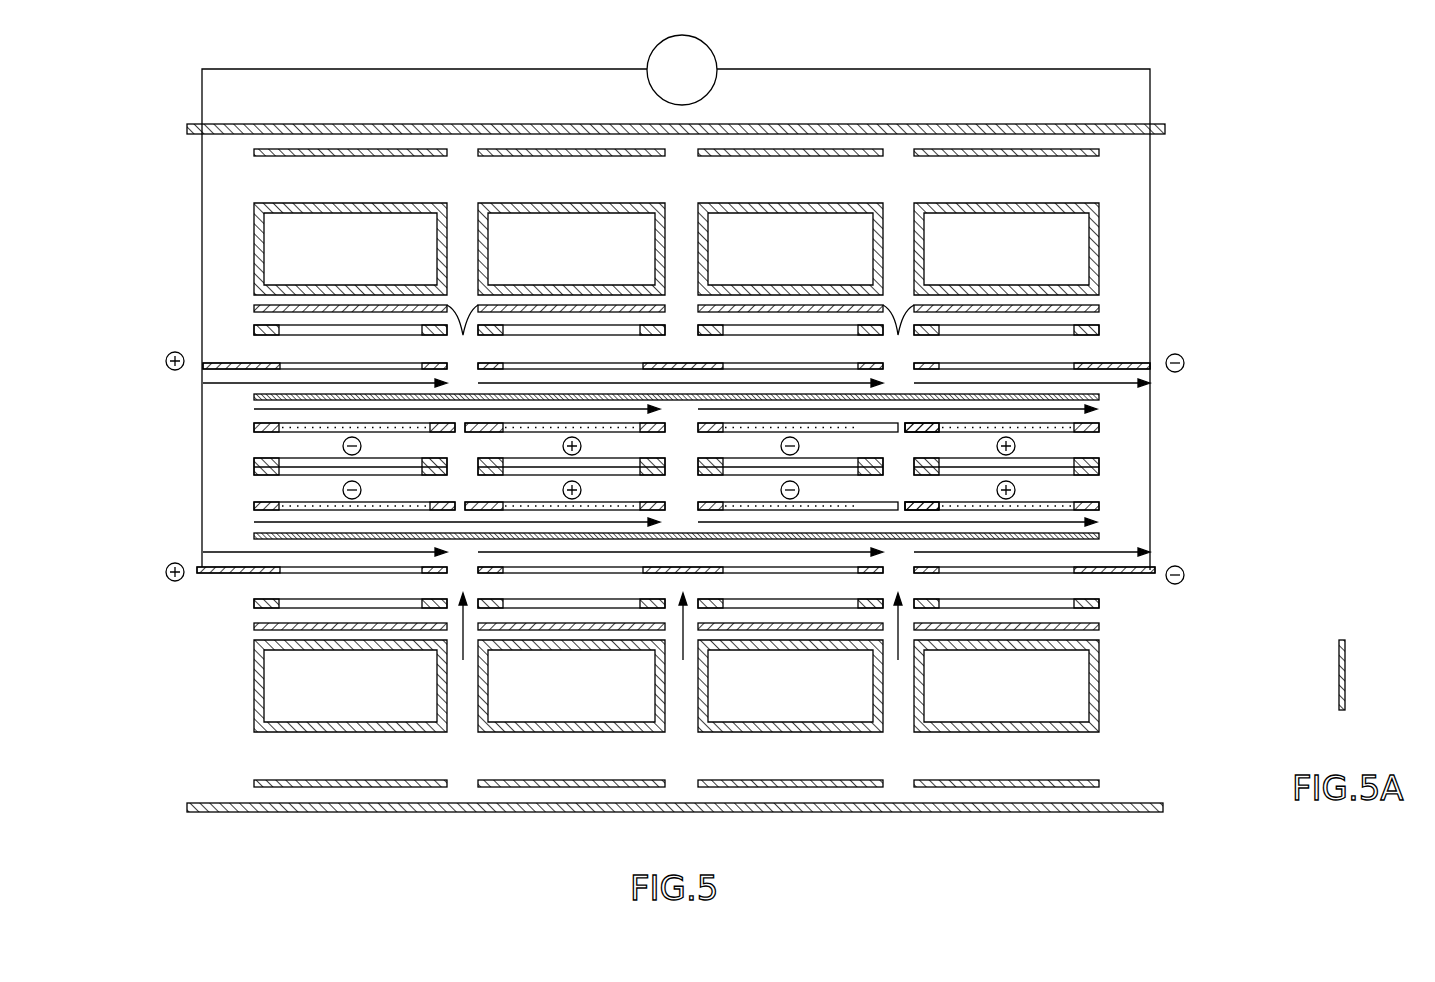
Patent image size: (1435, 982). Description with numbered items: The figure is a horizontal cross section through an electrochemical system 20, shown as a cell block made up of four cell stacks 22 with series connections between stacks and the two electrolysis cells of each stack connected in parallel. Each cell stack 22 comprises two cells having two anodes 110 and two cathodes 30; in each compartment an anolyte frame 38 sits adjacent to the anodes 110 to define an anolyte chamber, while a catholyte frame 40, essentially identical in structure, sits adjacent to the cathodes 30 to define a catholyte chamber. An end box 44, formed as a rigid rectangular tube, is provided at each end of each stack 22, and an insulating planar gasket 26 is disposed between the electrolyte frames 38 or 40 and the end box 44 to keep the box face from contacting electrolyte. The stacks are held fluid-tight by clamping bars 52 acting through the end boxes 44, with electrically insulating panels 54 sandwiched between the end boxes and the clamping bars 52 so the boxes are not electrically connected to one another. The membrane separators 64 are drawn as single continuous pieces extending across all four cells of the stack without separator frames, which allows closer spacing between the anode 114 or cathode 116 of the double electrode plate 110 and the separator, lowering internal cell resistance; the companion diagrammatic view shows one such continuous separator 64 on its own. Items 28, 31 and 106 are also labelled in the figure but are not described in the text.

In FIG. 5, the electrochemical system 20 is at (1168, 100).
In FIG. 5, the cell stack 22 is at (312, 203).
In FIG. 5, the insulating planar gasket 26 is at (1155, 680).
In FIG. 5, the air flow direction 28 is at (681, 644).
In FIG. 5, the cathode 30 is at (1142, 362).
In FIG. 5, the positive electrode connection 31 is at (205, 362).
In FIG. 5, the anolyte frame 38 is at (254, 330).
In FIG. 5, the catholyte frame 40 is at (1099, 330).
In FIG. 5, the end box 44 is at (383, 203).
In FIG. 5, the clamping bar 52 is at (360, 124).
In FIG. 5, the electrically insulating panel 54 is at (383, 156).
In FIG. 5, the membrane separator 64 is at (254, 397).
In FIG. 5A, the membrane separator 64 is at (1345, 690).
In FIG. 5, the electrode end connector 106 is at (468, 432).
In FIG. 5, the double electrode plate 110 is at (703, 364).
In FIG. 5, the anode 114 is at (1028, 432).
In FIG. 5, the cathode 116 is at (375, 432).